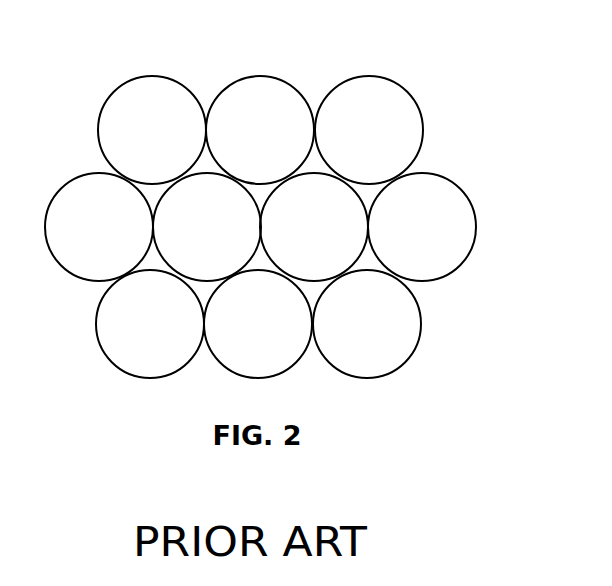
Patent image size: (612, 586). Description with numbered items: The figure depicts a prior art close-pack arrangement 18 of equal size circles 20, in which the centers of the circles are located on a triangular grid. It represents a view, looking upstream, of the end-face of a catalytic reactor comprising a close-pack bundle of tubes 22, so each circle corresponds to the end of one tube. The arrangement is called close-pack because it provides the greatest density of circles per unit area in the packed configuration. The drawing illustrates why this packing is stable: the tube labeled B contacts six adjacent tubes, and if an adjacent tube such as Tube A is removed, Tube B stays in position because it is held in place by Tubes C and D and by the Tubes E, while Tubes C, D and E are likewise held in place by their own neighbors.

The close-pack arrangement 18 is at (420, 68).
The equal size circles 20 is at (460, 186).
The close-pack bundle of tubes 22 is at (420, 333).